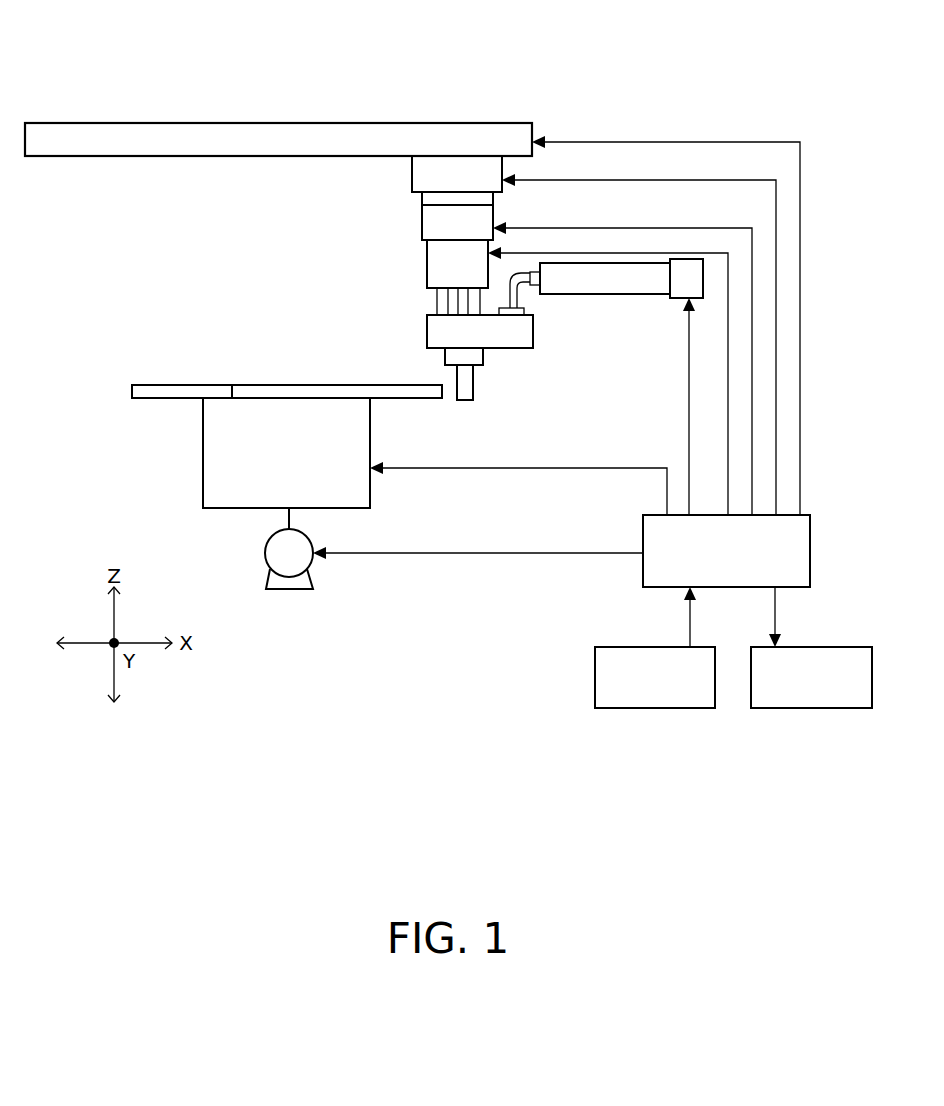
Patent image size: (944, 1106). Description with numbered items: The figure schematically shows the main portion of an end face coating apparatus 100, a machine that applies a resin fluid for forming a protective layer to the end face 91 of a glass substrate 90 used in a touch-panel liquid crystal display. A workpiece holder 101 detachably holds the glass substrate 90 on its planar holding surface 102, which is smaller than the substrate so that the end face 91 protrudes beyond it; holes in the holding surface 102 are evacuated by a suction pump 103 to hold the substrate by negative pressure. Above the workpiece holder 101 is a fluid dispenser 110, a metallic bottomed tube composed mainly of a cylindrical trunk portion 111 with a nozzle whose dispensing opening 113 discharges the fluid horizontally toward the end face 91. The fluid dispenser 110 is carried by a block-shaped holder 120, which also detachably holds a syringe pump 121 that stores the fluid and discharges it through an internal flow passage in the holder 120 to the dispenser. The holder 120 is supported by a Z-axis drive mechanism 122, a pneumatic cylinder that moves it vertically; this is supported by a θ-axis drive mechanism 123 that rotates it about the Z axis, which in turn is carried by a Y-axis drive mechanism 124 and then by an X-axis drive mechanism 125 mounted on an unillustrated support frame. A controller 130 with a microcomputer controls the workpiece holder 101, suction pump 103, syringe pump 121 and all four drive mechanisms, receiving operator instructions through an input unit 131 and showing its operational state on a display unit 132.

The end face coating apparatus 100 is at (116, 51).
The X-axis drive mechanism 125 is at (383, 123).
The Y-axis drive mechanism 124 is at (412, 185).
The θ-axis drive mechanism 123 is at (422, 228).
The Z-axis drive mechanism 122 is at (427, 280).
The holder 120 is at (427, 331).
The syringe pump 121 is at (608, 298).
The fluid dispenser 110 is at (528, 375).
The trunk portion 111 is at (483, 355).
The dispensing opening 113 is at (473, 384).
The glass substrate 90 is at (141, 385).
The holding surface 102 is at (231, 385).
The end face 91 is at (443, 399).
The workpiece holder 101 is at (203, 449).
The suction pump 103 is at (266, 552).
The controller 130 is at (658, 515).
The input unit 131 is at (657, 708).
The display unit 132 is at (811, 708).